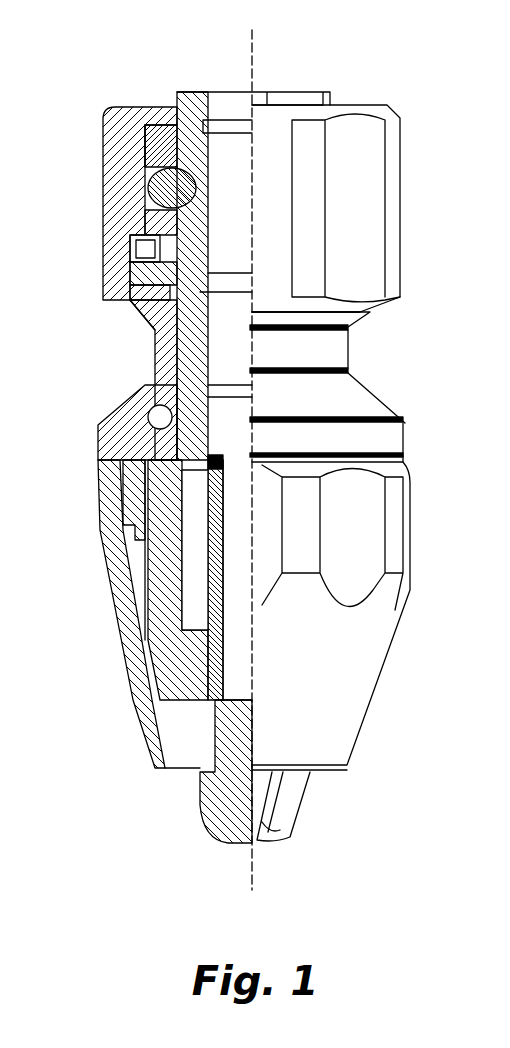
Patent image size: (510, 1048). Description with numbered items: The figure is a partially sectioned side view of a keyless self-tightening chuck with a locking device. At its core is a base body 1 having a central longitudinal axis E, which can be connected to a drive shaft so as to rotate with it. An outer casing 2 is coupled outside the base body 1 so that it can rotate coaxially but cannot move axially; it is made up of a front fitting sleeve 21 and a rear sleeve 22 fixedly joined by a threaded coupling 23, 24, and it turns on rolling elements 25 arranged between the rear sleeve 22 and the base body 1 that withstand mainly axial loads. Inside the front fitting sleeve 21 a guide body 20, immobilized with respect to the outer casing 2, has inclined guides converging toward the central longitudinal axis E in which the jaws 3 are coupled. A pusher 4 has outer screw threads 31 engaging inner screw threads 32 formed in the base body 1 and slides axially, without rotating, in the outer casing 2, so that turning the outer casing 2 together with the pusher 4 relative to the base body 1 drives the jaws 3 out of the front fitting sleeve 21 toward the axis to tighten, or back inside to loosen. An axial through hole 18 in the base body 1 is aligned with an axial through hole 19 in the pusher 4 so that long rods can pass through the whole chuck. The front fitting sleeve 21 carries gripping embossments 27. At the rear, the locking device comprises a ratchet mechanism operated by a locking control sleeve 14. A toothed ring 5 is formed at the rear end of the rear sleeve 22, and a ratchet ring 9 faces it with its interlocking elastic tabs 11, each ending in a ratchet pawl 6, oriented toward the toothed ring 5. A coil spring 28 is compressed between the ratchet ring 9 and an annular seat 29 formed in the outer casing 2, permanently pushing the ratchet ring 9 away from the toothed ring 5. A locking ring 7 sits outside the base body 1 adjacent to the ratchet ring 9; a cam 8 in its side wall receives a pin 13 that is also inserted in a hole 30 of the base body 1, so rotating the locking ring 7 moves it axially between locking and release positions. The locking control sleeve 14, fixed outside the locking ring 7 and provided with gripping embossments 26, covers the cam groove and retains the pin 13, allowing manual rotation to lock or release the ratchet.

The base body 1 is at (190, 72).
The central longitudinal axis E is at (258, 62).
The outer casing 2 is at (70, 460).
The jaws 3 is at (297, 808).
The pusher 4 is at (140, 692).
The toothed ring 5 is at (122, 298).
The ratchet pawl 6 is at (130, 272).
The locking ring 7 is at (160, 125).
The cam 8 is at (150, 162).
The ratchet ring 9 is at (145, 232).
The interlocking elastic tabs 11 is at (130, 246).
The pin 13 is at (148, 188).
The locking control sleeve 14 is at (124, 107).
The axial through hole 18 is at (238, 150).
The axial through hole 19 is at (246, 636).
The guide body 20 is at (160, 740).
The front fitting sleeve 21 is at (168, 618).
The rear sleeve 22 is at (158, 372).
The threaded coupling 23 is at (120, 516).
The threaded coupling 24 is at (128, 540).
The rolling elements 25 is at (108, 426).
The gripping embossments 26 is at (396, 186).
The gripping embossments 27 is at (410, 528).
The coil spring 28 is at (200, 248).
The annular seat 29 is at (150, 352).
The hole 30 is at (195, 140).
The outer screw threads 31 is at (190, 570).
The inner screw threads 32 is at (225, 445).